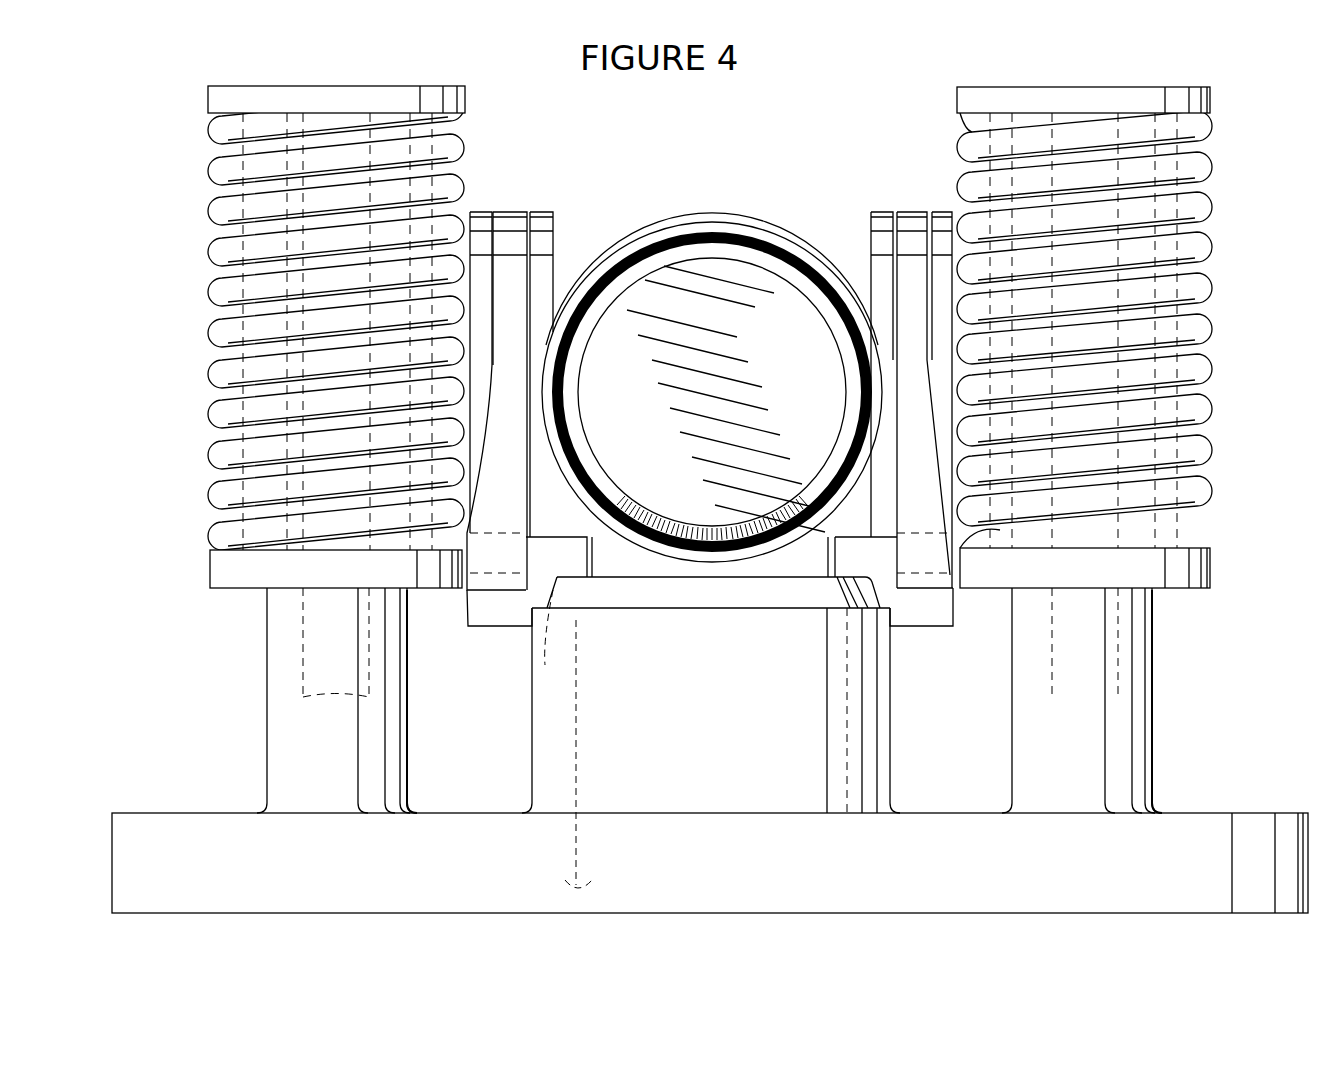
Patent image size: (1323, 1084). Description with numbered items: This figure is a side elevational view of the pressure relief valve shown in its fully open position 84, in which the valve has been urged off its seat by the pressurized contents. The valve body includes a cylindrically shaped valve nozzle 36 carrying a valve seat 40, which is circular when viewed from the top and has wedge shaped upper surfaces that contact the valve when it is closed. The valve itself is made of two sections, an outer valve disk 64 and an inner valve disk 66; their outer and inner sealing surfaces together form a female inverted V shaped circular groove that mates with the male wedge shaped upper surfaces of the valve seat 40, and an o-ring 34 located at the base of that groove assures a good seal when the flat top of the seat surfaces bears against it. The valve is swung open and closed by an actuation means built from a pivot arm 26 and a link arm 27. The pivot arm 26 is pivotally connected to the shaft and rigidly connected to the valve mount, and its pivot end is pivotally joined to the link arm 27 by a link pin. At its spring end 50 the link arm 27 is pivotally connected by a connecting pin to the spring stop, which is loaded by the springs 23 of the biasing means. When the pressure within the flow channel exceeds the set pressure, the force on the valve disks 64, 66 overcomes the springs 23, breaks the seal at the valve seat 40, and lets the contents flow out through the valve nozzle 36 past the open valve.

The fully open position 84 is at (788, 72).
The springs 23 is at (467, 133).
The outer valve disk 64 is at (620, 245).
The o-ring 34 is at (678, 283).
The inner valve disk 66 is at (743, 280).
The pivot arm 26 is at (880, 222).
The link arm 27 is at (912, 222).
The spring end 50 is at (205, 578).
The valve seat 40 is at (545, 660).
The valve nozzle 36 is at (610, 705).